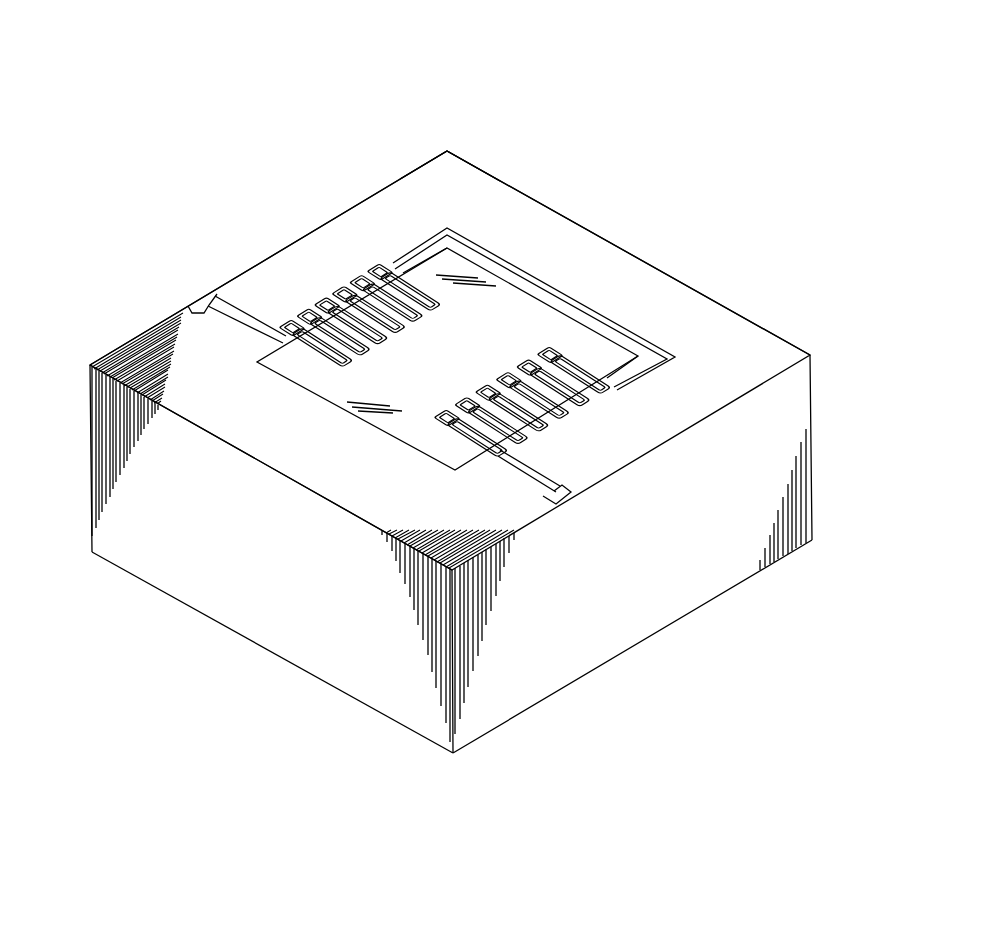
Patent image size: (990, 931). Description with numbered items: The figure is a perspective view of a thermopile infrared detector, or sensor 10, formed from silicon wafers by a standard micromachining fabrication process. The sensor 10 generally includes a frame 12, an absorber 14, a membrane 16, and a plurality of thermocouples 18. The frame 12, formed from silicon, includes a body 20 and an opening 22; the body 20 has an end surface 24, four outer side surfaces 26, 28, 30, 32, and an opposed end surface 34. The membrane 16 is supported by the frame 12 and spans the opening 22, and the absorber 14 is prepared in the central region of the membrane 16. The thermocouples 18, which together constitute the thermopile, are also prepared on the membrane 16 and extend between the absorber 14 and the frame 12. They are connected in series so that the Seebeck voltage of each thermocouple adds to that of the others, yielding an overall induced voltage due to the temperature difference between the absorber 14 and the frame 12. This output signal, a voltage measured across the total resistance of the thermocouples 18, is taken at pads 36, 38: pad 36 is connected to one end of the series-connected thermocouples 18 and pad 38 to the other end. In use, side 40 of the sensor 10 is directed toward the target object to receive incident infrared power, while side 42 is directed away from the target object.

The sensor 10 is at (866, 157).
The frame 12 is at (814, 397).
The absorber 14 is at (468, 358).
The membrane 16 is at (524, 318).
The thermocouples 18 is at (376, 271).
The body 20 is at (715, 363).
The opening 22 is at (477, 263).
The end surface 24 is at (430, 183).
The outer side surface 26 is at (274, 618).
The outer side surface 28 is at (592, 632).
The outer side surface 30 is at (689, 283).
The outer side surface 32 is at (257, 263).
The opposed end surface 34 is at (157, 588).
The pad 36 is at (576, 497).
The pad 38 is at (189, 309).
The side 40 is at (618, 112).
The side 42 is at (322, 744).